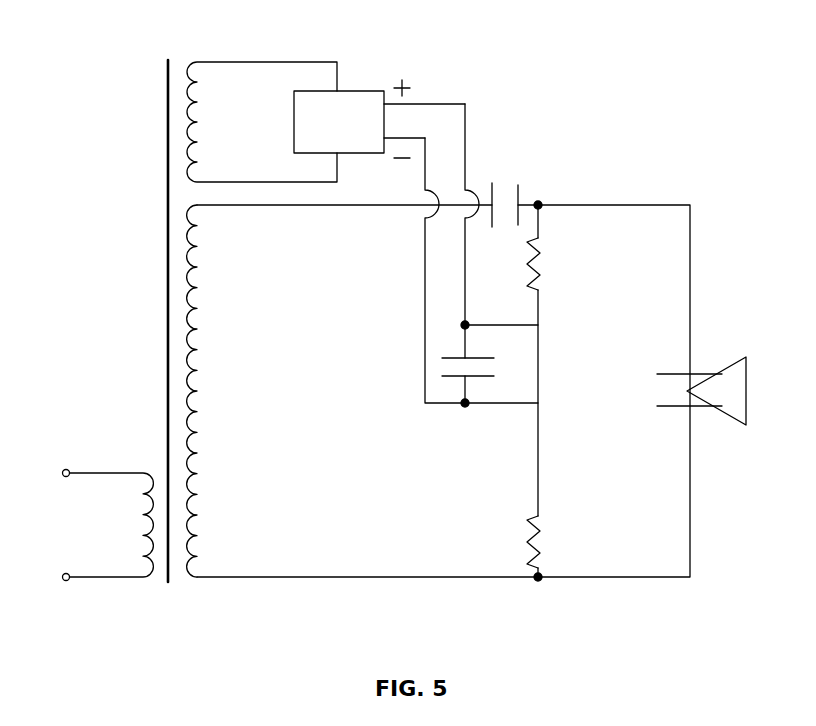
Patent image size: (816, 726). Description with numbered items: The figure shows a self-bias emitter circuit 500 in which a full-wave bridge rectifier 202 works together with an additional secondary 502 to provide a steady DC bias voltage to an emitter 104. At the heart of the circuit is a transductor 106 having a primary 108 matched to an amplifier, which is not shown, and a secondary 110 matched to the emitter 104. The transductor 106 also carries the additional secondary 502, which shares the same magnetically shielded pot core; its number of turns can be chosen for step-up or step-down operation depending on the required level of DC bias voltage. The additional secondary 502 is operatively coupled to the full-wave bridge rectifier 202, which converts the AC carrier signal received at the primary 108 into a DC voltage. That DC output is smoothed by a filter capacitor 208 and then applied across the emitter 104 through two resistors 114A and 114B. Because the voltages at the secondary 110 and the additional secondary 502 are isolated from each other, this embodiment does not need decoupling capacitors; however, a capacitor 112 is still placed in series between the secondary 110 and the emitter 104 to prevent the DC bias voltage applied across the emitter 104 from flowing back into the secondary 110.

The self-bias emitter circuit 500 is at (92, 130).
The additional secondary 502 is at (192, 108).
The full-wave bridge rectifier 202 is at (350, 102).
The capacitor 112 is at (503, 190).
The resistor 114A is at (537, 272).
The resistor 114B is at (532, 534).
The emitter 104 is at (736, 379).
The filter capacitor 208 is at (476, 365).
The secondary 110 is at (192, 342).
The primary 108 is at (147, 468).
The transductor 106 is at (170, 588).